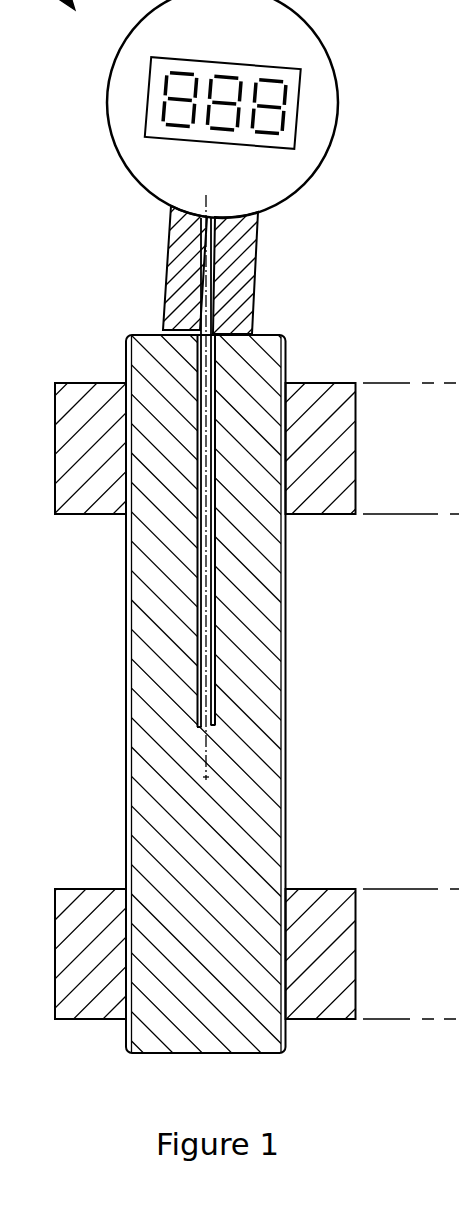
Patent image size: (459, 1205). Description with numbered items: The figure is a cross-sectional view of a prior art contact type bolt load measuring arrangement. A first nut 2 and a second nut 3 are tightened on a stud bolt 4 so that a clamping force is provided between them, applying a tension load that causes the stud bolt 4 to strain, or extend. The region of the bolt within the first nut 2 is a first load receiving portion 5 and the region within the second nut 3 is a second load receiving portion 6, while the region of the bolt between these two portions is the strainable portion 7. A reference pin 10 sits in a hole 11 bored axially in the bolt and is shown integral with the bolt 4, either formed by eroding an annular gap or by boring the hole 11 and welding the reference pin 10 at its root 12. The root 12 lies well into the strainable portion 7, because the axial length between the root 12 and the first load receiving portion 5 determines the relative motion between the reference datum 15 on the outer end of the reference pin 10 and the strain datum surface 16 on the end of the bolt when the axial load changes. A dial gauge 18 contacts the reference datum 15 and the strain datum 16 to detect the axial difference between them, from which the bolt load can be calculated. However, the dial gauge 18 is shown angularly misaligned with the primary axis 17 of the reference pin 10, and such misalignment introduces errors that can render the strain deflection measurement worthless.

The first nut 2 is at (82, 507).
The second nut 3 is at (78, 894).
The stud bolt 4 is at (148, 1042).
The first load receiving portion 5 is at (398, 383).
The second load receiving portion 6 is at (398, 889).
The strainable portion 7 is at (418, 514).
The reference pin 10 is at (203, 593).
The hole 11 is at (197, 659).
The root 12 is at (197, 727).
The reference datum 15 is at (214, 338).
The strain datum surface 16 is at (174, 336).
The primary axis 17 is at (206, 777).
The dial gauge 18 is at (282, 194).